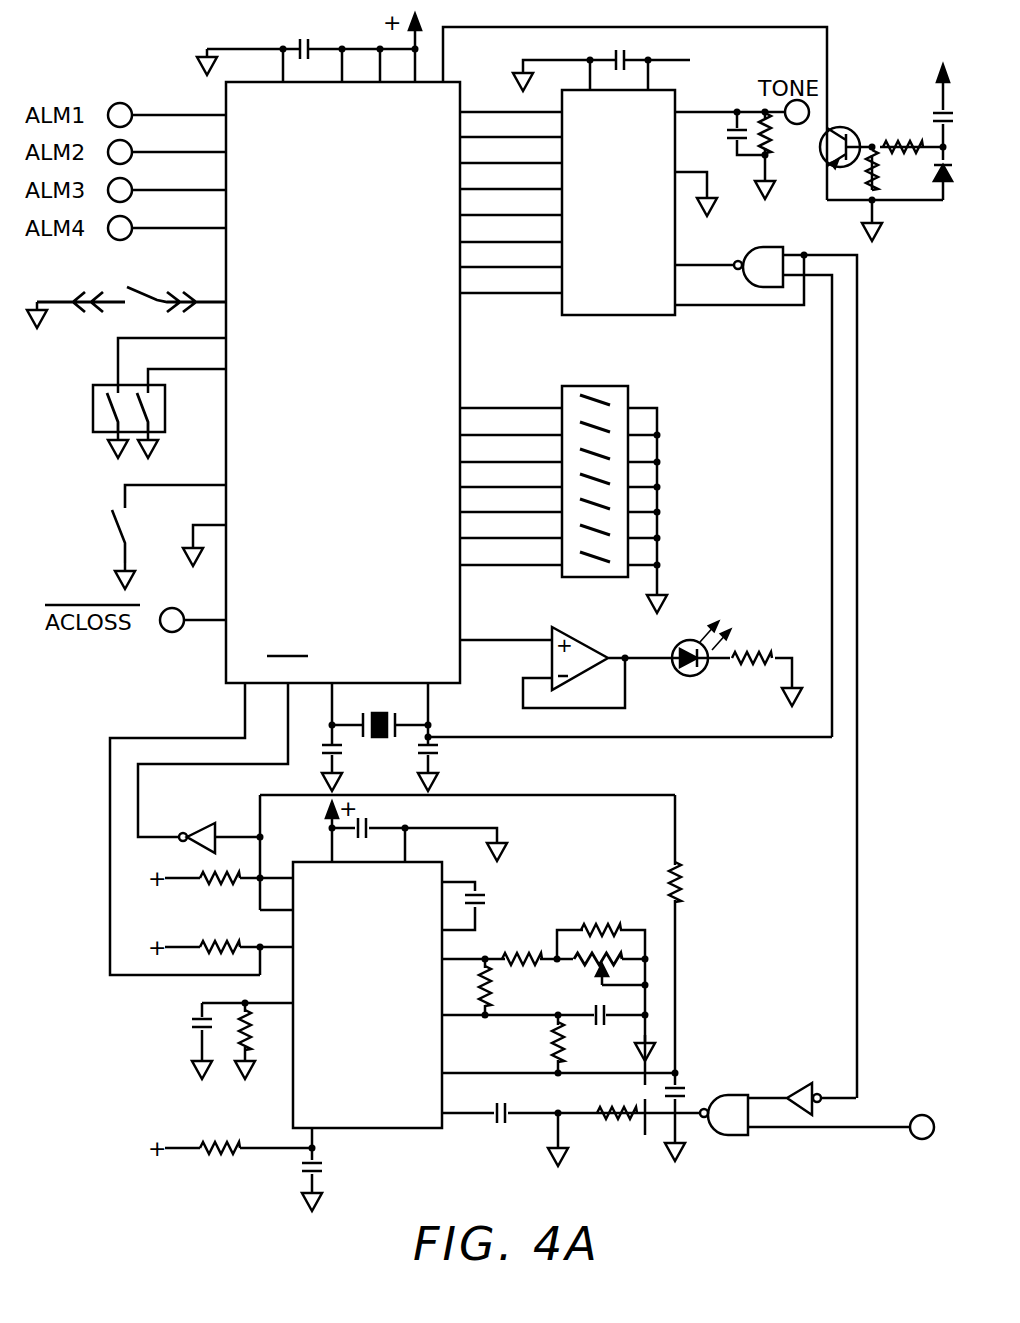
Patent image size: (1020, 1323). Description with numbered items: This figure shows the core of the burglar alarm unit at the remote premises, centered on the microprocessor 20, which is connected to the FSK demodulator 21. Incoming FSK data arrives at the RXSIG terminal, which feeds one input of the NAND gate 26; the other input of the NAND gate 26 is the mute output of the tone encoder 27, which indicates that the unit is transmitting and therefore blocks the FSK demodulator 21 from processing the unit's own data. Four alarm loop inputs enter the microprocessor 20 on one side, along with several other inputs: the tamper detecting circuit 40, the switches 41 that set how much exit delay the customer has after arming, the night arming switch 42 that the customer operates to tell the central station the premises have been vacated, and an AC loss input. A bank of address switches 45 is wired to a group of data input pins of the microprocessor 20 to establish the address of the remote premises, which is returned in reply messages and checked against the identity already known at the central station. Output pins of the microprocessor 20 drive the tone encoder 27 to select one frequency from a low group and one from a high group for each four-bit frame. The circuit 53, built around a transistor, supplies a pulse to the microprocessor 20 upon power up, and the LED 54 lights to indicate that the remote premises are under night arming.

The microprocessor 20 is at (357, 279).
The FSK demodulator 21 is at (385, 915).
The NAND gate 26 is at (727, 1100).
The tone encoder 27 is at (650, 192).
The tamper detecting circuit 40 is at (141, 285).
The switches 41 is at (165, 400).
The night arming switch 42 is at (130, 531).
The switches 45 is at (620, 392).
The circuit 53 is at (887, 208).
The LED 54 is at (672, 640).